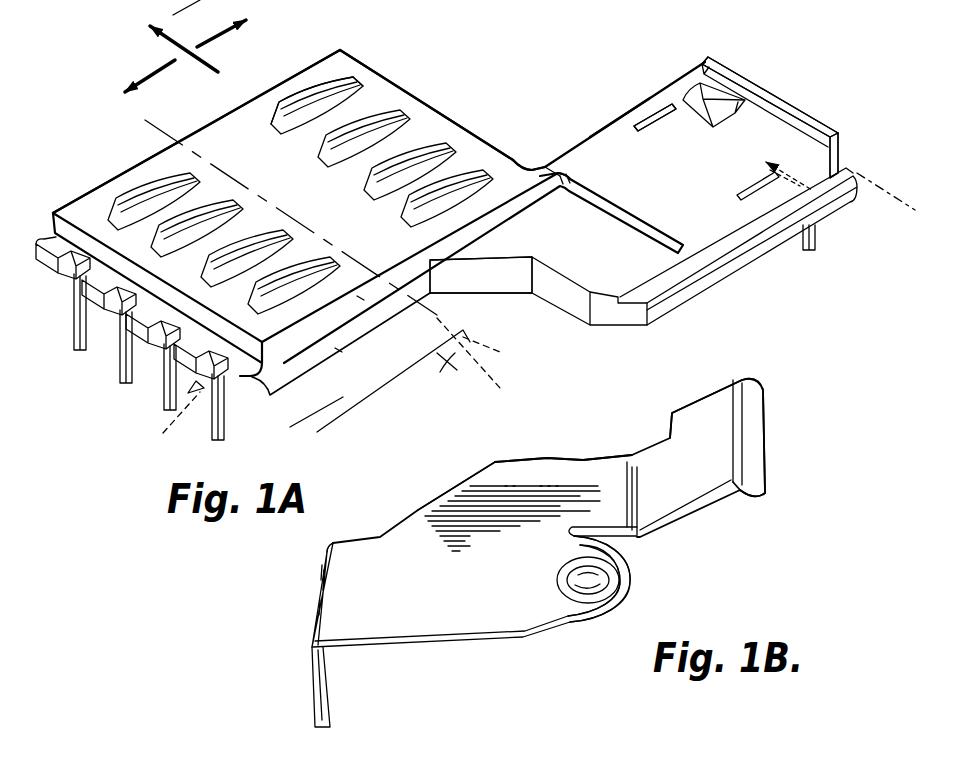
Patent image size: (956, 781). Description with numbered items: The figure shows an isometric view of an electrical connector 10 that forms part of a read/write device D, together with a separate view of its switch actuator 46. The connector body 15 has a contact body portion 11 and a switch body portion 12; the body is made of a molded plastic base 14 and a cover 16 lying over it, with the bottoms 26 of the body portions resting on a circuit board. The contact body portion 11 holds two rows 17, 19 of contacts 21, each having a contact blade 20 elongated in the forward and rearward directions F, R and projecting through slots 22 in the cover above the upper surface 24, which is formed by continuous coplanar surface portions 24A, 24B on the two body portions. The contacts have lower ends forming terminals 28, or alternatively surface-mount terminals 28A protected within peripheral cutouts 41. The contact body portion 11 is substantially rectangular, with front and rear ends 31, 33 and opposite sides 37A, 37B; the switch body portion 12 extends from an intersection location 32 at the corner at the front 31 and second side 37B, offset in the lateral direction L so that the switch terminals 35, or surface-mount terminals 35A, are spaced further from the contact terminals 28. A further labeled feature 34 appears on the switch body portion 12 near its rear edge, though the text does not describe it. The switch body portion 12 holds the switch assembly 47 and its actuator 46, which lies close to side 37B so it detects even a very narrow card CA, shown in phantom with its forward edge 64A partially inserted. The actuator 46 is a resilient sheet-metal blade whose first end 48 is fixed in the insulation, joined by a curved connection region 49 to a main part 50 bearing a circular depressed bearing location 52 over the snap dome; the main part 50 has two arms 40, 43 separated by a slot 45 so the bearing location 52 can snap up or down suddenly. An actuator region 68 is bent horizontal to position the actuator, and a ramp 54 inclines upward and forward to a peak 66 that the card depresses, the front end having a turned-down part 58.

In FIG. 1A, the connector 10 is at (388, 50).
In FIG. 1A, the contact body portion 11 is at (403, 90).
In FIG. 1A, the switch body portion 12 is at (643, 100).
In FIG. 1A, the base 14 is at (338, 350).
In FIG. 1A, the body 15 is at (515, 100).
In FIG. 1A, the cover 16 is at (360, 298).
In FIG. 1A, the first row of contacts 17 is at (110, 181).
In FIG. 1A, the second row of contacts 19 is at (282, 86).
In FIG. 1A, the contact blade 20 is at (291, 98).
In FIG. 1A, the contact 21 is at (330, 76).
In FIG. 1A, the slot 22 is at (277, 297).
In FIG. 1A, the upper surface 24 is at (320, 198).
In FIG. 1A, the surface portion 24A is at (381, 241).
In FIG. 1A, the surface portion 24B is at (716, 175).
In FIG. 1A, the bottom 26 is at (250, 393).
In FIG. 1A, the terminal 28 is at (125, 377).
In FIG. 1A, the surface-mount terminal 28A is at (166, 432).
In FIG. 1A, the front end 31 is at (437, 130).
In FIG. 1A, the intersection location 32 is at (548, 165).
In FIG. 1A, the rear end 33 is at (83, 347).
In FIG. 1A, the rear edge of platform 34 is at (620, 123).
In FIG. 1A, the terminal 35 is at (810, 245).
In FIG. 1A, the surface-mount terminal 35A is at (823, 120).
In FIG. 1A, the first side 37A is at (153, 153).
In FIG. 1A, the second side 37B is at (432, 270).
In FIG. 1A, the cutout 41 is at (62, 293).
In FIG. 1A, the switch actuator 46 is at (700, 95).
In FIG. 1B, the switch actuator 46 is at (458, 487).
In FIG. 1A, the switch assembly 47 is at (738, 63).
In FIG. 1A, the forward edge 64A is at (496, 352).
In FIG. 1A, the narrow card CA is at (500, 384).
In FIG. 1A, the read/write device D is at (864, 180).
In FIG. 1A, the lateral direction L is at (167, 37).
In FIG. 1A, the forward direction F is at (217, 36).
In FIG. 1A, the rearward direction R is at (148, 84).
In FIG. 1B, the arm 40 is at (573, 620).
In FIG. 1B, the arm 43 is at (587, 460).
In FIG. 1B, the slot 45 is at (597, 542).
In FIG. 1B, the first end 48 is at (330, 678).
In FIG. 1B, the curved connection region 49 is at (333, 557).
In FIG. 1B, the main part 50 is at (413, 507).
In FIG. 1B, the bearing location 52 is at (627, 587).
In FIG. 1B, the ramp 54 is at (703, 403).
In FIG. 1B, the turned-down part 58 is at (760, 407).
In FIG. 1B, the peak 66 is at (743, 380).
In FIG. 1B, the actuator region 68 is at (615, 472).